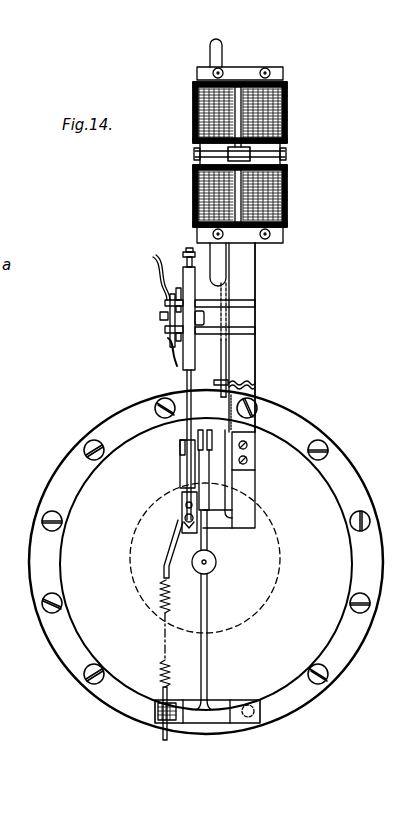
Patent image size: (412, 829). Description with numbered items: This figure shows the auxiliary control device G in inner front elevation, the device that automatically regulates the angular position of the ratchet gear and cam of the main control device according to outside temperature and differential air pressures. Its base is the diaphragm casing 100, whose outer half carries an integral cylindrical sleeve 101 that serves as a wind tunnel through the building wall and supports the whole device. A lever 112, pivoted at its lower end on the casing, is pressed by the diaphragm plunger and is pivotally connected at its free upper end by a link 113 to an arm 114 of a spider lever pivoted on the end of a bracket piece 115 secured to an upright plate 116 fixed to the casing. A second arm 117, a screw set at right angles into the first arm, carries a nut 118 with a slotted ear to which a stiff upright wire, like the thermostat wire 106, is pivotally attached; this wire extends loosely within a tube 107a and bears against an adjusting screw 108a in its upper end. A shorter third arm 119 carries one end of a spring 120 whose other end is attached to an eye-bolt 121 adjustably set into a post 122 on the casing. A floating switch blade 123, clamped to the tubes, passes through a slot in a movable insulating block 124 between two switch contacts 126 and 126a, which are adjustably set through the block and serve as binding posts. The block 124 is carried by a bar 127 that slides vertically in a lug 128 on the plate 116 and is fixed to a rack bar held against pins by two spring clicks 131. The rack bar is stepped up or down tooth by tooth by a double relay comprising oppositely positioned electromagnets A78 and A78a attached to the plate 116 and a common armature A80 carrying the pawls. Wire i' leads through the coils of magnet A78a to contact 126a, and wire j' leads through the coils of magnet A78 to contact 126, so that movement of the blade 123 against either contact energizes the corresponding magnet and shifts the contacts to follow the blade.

The diaphragm casing 100 is at (80, 500).
The cylindrical sleeve 101 is at (265, 605).
The spring clicks 131 is at (213, 53).
The electromagnet A78 is at (287, 118).
The common armature A80 is at (283, 137).
The electromagnet A78a is at (287, 186).
The upright plate 116 is at (248, 372).
The bar 127 is at (227, 350).
The lug 128 is at (222, 382).
The block 124 is at (165, 302).
The switch contact 126 is at (205, 316).
The tube 107a is at (192, 362).
The adjusting screw 108a is at (190, 250).
The floating switch blade 123 is at (168, 312).
The switch contact 126a is at (168, 327).
The wire i' is at (151, 273).
The wire j' is at (145, 352).
The auxiliary control device G is at (78, 345).
The stiff upright wire 106 is at (188, 407).
The link 113 is at (213, 435).
The bracket piece 115 is at (248, 482).
The arm 114 is at (183, 468).
The nut 118 is at (185, 508).
The second arm 117 is at (193, 518).
The lever 112 is at (207, 645).
The third arm 119 is at (165, 548).
The spring 120 is at (160, 603).
The eye-bolt 121 is at (163, 692).
The post 122 is at (160, 704).